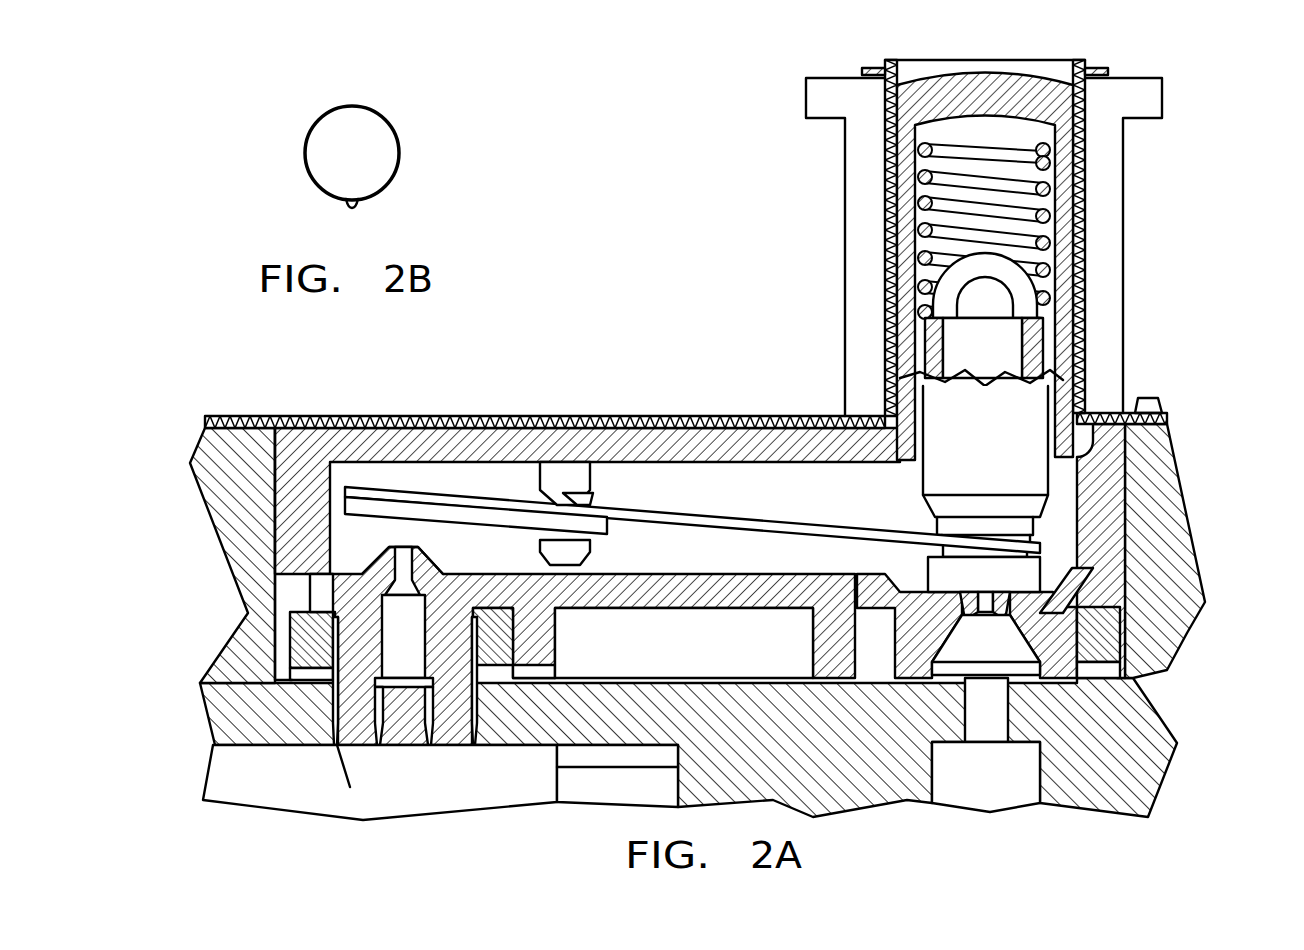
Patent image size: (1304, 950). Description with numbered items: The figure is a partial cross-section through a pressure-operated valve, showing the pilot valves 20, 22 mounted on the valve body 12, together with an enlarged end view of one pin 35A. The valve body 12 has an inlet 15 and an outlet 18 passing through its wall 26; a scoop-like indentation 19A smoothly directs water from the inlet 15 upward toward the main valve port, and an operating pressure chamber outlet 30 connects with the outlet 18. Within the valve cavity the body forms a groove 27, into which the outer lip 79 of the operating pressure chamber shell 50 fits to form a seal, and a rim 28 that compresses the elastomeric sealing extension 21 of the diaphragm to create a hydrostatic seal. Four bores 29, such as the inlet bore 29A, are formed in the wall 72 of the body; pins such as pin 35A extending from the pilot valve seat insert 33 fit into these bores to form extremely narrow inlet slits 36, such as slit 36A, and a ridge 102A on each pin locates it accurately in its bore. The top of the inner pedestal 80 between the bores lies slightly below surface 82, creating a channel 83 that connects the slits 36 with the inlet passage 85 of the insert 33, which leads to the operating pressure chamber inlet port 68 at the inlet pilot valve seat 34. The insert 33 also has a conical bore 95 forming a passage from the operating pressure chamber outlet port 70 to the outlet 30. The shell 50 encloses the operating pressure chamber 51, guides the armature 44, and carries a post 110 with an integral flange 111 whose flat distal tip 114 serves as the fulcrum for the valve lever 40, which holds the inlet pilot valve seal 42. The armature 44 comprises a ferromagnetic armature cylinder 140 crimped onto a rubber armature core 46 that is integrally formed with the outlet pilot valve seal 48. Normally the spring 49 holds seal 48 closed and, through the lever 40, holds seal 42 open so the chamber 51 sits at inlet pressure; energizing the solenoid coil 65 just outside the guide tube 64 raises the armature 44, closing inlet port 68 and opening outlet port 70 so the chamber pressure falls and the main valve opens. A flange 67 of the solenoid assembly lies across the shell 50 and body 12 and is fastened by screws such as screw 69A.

In FIG. 2A, the valve body 12 is at (225, 707).
In FIG. 2A, the inlet bore 15 is at (517, 791).
In FIG. 2A, the outlet bore 18 is at (995, 800).
In FIG. 2A, the scoop-like indentation 19A is at (615, 757).
In FIG. 2A, the pilot valve 20 is at (421, 476).
In FIG. 2A, the sealing extension 21 is at (310, 630).
In FIG. 2A, the pilot valve 22 is at (880, 490).
In FIG. 2A, the wall 26 is at (197, 477).
In FIG. 2A, the inlet groove 27 is at (298, 668).
In FIG. 2A, the rim 28 is at (298, 677).
In FIG. 2A, the bores 29 is at (484, 648).
In FIG. 2A, the operating pressure chamber inlet bore 29A is at (333, 720).
In FIG. 2A, the operating pressure chamber outlet 30 is at (992, 726).
In FIG. 2A, the pilot valve seat insert 33 is at (735, 597).
In FIG. 2A, the inlet pilot valve seat 34 is at (423, 557).
In FIG. 2A, the pin 35A is at (338, 747).
In FIG. 2B, the pin 35A is at (375, 145).
In FIG. 2A, the inlet slits 36 is at (452, 762).
In FIG. 2A, the operating chamber inlet slit 36A is at (352, 783).
In FIG. 2A, the valve lever 40 is at (680, 512).
In FIG. 2A, the inlet pilot valve seal 42 is at (607, 527).
In FIG. 2A, the armature 44 is at (995, 455).
In FIG. 2A, the armature core 46 is at (992, 360).
In FIG. 2A, the outlet pilot valve seal 48 is at (940, 570).
In FIG. 2A, the spring 49 is at (1110, 212).
In FIG. 2A, the operating pressure chamber shell 50 is at (582, 420).
In FIG. 2A, the operating pressure chamber 51 is at (770, 505).
In FIG. 2A, the guide tube 64 is at (900, 222).
In FIG. 2A, the solenoid coil 65 is at (1115, 182).
In FIG. 2A, the flange 67 is at (692, 416).
In FIG. 2A, the operating pressure chamber inlet port 68 is at (400, 547).
In FIG. 2A, the screw 69A is at (1163, 400).
In FIG. 2A, the operating pressure chamber outlet port 70 is at (990, 590).
In FIG. 2A, the wall 72 is at (623, 693).
In FIG. 2A, the outer lip 79 is at (287, 617).
In FIG. 2A, the inner pedestal 80 is at (415, 743).
In FIG. 2A, the surface 82 is at (665, 682).
In FIG. 2A, the channel 83 is at (398, 680).
In FIG. 2A, the inlet passage 85 is at (412, 631).
In FIG. 2A, the conical bore 95 is at (992, 660).
In FIG. 2B, the ridge 102A is at (353, 208).
In FIG. 2A, the post 110 is at (573, 553).
In FIG. 2A, the flange 111 is at (550, 475).
In FIG. 2A, the distal tip 114 is at (580, 497).
In FIG. 2A, the armature cylinder 140 is at (1085, 348).